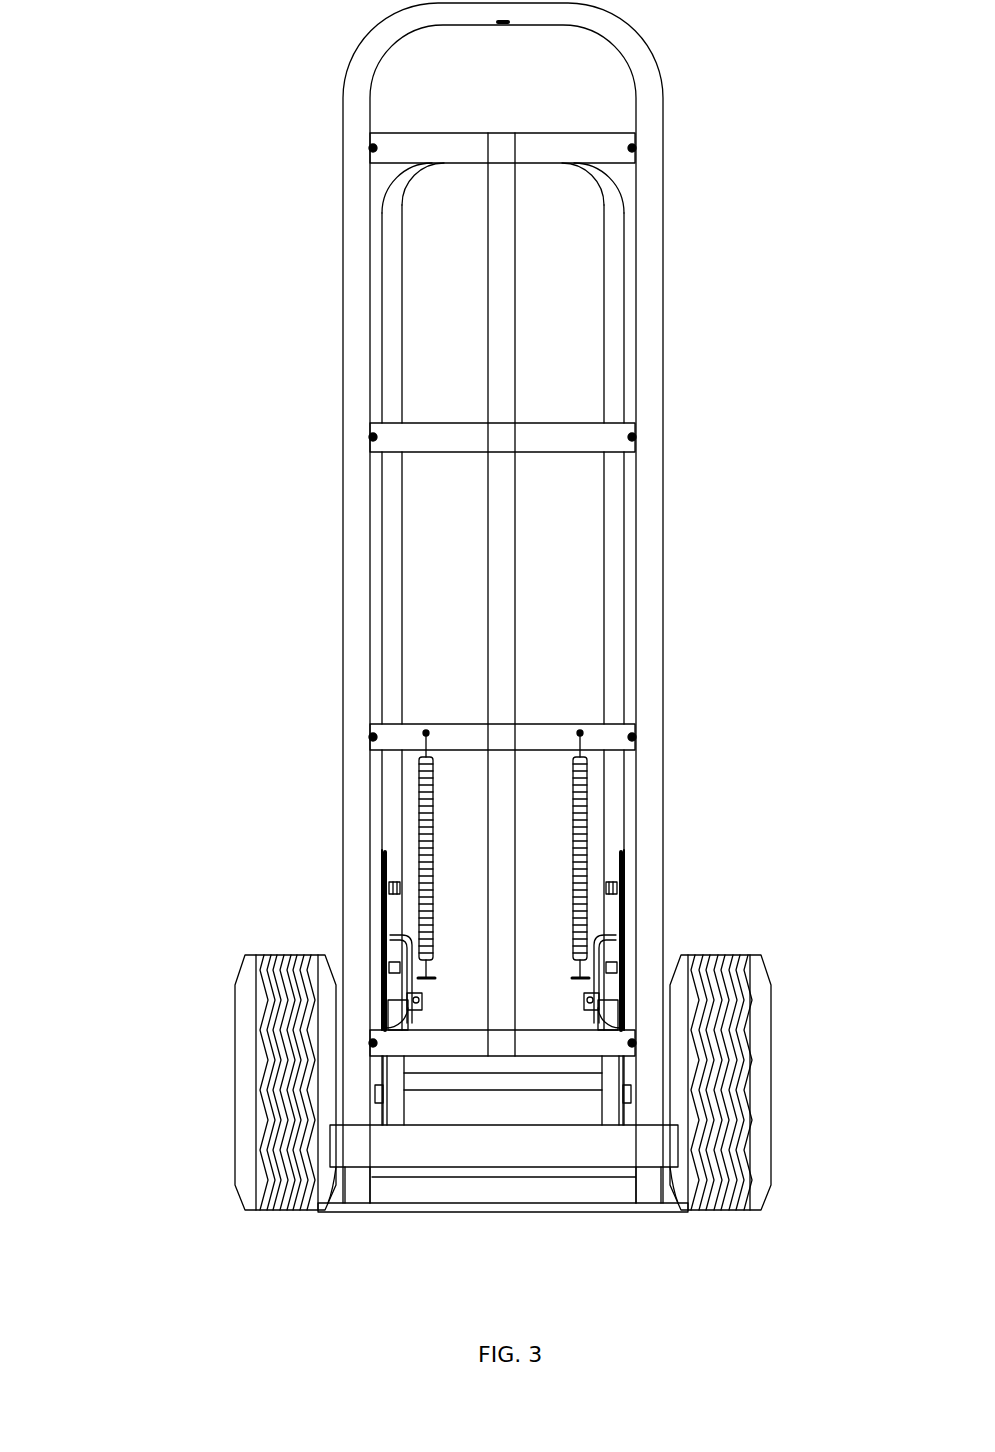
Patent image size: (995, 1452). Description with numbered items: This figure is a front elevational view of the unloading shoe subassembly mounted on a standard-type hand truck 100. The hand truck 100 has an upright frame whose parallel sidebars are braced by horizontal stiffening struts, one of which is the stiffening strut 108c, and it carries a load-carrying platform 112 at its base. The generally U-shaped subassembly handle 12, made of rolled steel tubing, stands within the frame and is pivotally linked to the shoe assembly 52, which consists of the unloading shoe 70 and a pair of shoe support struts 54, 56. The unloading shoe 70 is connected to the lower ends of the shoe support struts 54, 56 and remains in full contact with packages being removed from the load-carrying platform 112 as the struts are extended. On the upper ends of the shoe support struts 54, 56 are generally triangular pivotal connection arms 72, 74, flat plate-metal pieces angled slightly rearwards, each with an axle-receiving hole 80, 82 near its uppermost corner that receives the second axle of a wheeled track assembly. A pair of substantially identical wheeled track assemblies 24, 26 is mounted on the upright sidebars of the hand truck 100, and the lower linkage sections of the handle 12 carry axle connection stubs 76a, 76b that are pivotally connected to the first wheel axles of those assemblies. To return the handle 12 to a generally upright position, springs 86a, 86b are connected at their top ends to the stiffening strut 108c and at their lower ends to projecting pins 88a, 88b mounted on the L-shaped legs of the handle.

The hand truck 100 is at (320, 265).
The subassembly handle 12 is at (626, 528).
The stiffening strut 108c is at (555, 728).
The spring 86a is at (420, 776).
The spring 86b is at (585, 790).
The axle connection stub 76a is at (384, 862).
The axle connection stub 76b is at (622, 860).
The axle-receiving hole 80 is at (370, 952).
The axle-receiving hole 82 is at (622, 938).
The projecting pin 88a is at (389, 890).
The projecting pin 88b is at (618, 884).
The wheeled track assembly 24 is at (362, 969).
The wheeled track assembly 26 is at (636, 950).
The pivotal connection arm 72 is at (386, 1028).
The pivotal connection arm 74 is at (625, 1005).
The shoe support strut 54 is at (395, 1102).
The shoe support strut 56 is at (612, 1112).
The shoe assembly 52 is at (562, 1120).
The unloading shoe 70 is at (663, 1142).
The load-carrying platform 112 is at (655, 1212).